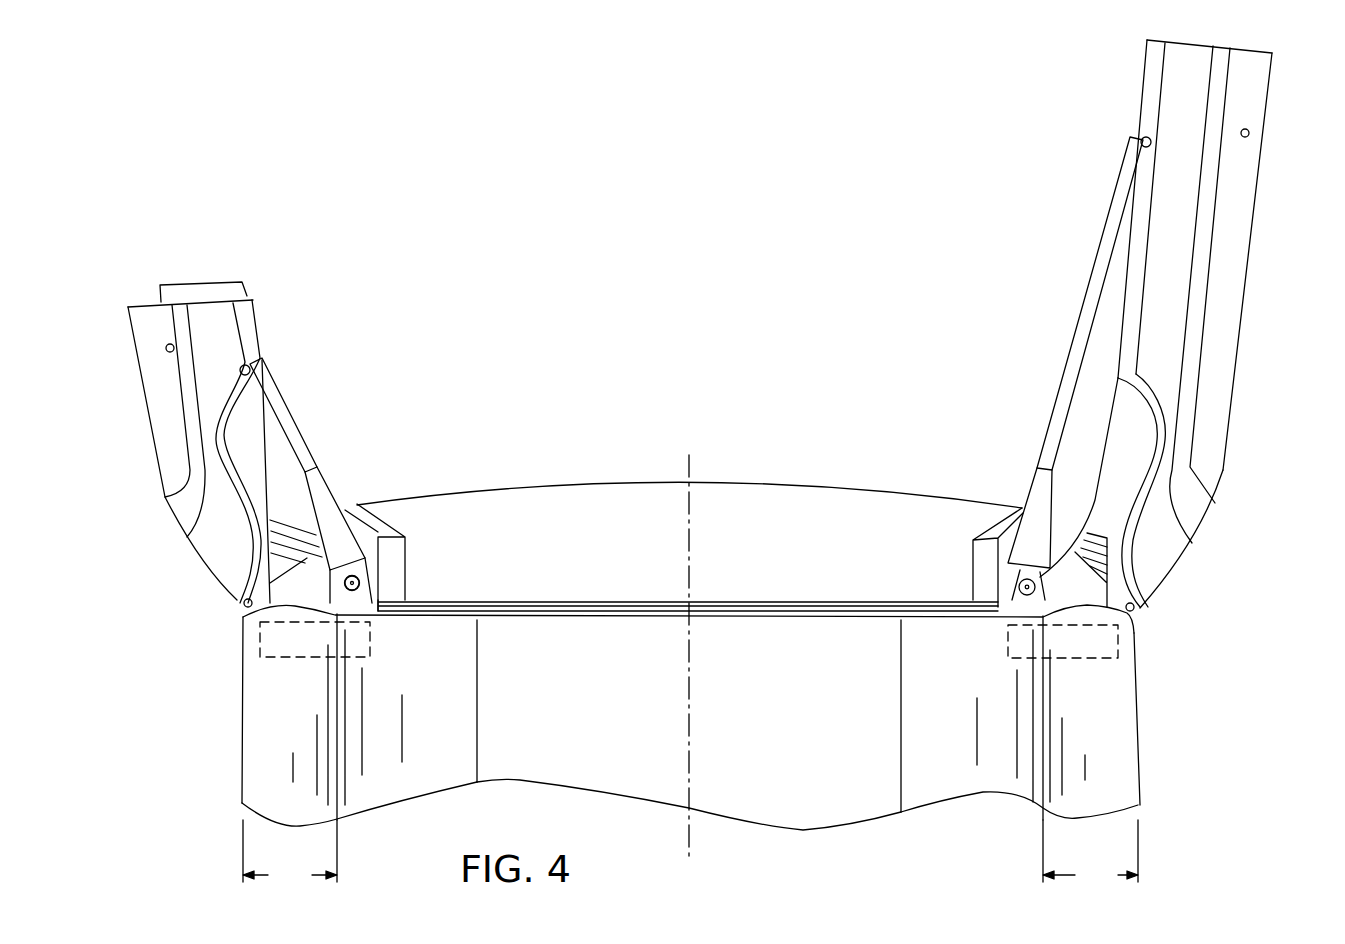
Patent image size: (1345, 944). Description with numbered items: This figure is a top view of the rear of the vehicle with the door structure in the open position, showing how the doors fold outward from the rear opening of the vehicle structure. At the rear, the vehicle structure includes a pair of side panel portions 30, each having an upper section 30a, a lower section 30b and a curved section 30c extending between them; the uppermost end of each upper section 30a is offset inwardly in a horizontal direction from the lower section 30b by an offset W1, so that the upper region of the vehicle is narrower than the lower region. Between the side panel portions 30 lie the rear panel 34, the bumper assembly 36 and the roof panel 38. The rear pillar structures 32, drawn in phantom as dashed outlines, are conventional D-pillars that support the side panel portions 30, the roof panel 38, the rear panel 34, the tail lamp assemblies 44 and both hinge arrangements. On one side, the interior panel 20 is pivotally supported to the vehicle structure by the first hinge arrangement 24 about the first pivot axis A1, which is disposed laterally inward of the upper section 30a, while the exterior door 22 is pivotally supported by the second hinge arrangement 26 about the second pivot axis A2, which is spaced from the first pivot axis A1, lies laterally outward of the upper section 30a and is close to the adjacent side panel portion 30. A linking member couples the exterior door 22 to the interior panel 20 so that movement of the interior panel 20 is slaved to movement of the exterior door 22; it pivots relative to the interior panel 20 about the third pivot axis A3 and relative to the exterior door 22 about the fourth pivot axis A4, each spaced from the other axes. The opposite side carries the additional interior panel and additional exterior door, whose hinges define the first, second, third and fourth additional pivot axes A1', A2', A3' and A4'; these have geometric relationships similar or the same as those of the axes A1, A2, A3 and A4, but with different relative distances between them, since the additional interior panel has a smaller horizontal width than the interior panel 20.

The interior panel 20 is at (1092, 298).
The exterior door 22 is at (1230, 264).
The first hinge arrangement 24 is at (990, 599).
The second hinge arrangement 26 is at (1163, 608).
The side panel portion 30 is at (155, 707).
The upper section 30a is at (337, 752).
The lower section 30b is at (242, 733).
The curved section 30c is at (263, 790).
The rear pillar structure 32 is at (260, 650).
The rear panel 34 is at (498, 602).
The bumper assembly 36 is at (763, 523).
The roof panel 38 is at (775, 780).
The tail lamp assembly 44 is at (368, 542).
The first pivot axis A1 is at (983, 567).
The first additional pivot axis A1' is at (397, 574).
The second pivot axis A2 is at (1169, 623).
The second additional pivot axis A2' is at (207, 603).
The third pivot axis A3 is at (1106, 113).
The third additional pivot axis A3' is at (281, 351).
The fourth pivot axis A4 is at (1283, 127).
The fourth additional pivot axis A4' is at (123, 353).
The offset W1 is at (690, 855).